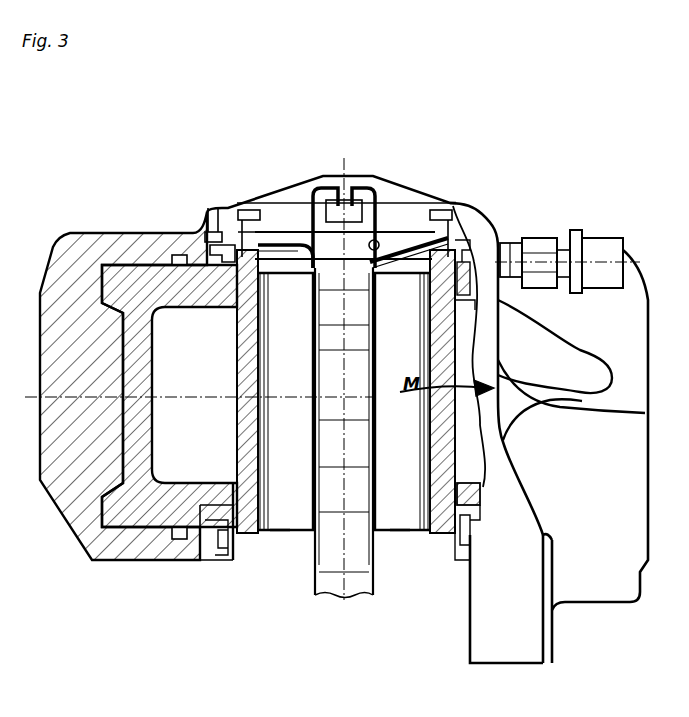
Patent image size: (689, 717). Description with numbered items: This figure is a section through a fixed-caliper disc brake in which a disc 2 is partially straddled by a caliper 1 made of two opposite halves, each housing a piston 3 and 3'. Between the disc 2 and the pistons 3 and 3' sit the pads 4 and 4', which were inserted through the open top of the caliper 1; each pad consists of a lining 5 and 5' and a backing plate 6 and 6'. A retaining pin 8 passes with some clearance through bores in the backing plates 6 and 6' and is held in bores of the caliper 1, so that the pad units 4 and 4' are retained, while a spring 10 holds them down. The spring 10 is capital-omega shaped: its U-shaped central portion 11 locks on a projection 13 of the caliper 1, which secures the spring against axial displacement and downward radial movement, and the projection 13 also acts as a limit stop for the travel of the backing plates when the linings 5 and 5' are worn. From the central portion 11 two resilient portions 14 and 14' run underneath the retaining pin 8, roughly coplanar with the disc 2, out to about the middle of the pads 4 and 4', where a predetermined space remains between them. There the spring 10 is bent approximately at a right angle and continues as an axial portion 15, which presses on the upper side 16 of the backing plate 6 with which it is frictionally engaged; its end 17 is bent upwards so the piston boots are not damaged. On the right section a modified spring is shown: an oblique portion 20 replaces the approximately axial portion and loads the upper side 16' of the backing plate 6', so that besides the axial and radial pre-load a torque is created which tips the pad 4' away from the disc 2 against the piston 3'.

The caliper 1 is at (150, 240).
The disc 2 is at (325, 565).
The piston 3 is at (169, 396).
The piston 3' is at (499, 511).
The pad 4 is at (275, 566).
The pad 4' is at (408, 567).
The lining 5 is at (248, 391).
The lining 5' is at (455, 391).
The backing plate 6 is at (220, 446).
The backing plate 6' is at (473, 345).
The retaining pin 8 is at (393, 240).
The spring 10 is at (283, 247).
The U-shaped central portion 11 is at (332, 192).
The projection 13 is at (355, 220).
The resilient portion 14 is at (285, 401).
The resilient portion 14' is at (396, 401).
The axial portion 15 is at (277, 243).
The upper side 16 is at (240, 401).
The upper side 16' is at (412, 401).
The end 17 is at (225, 206).
The oblique portion 20 is at (407, 253).